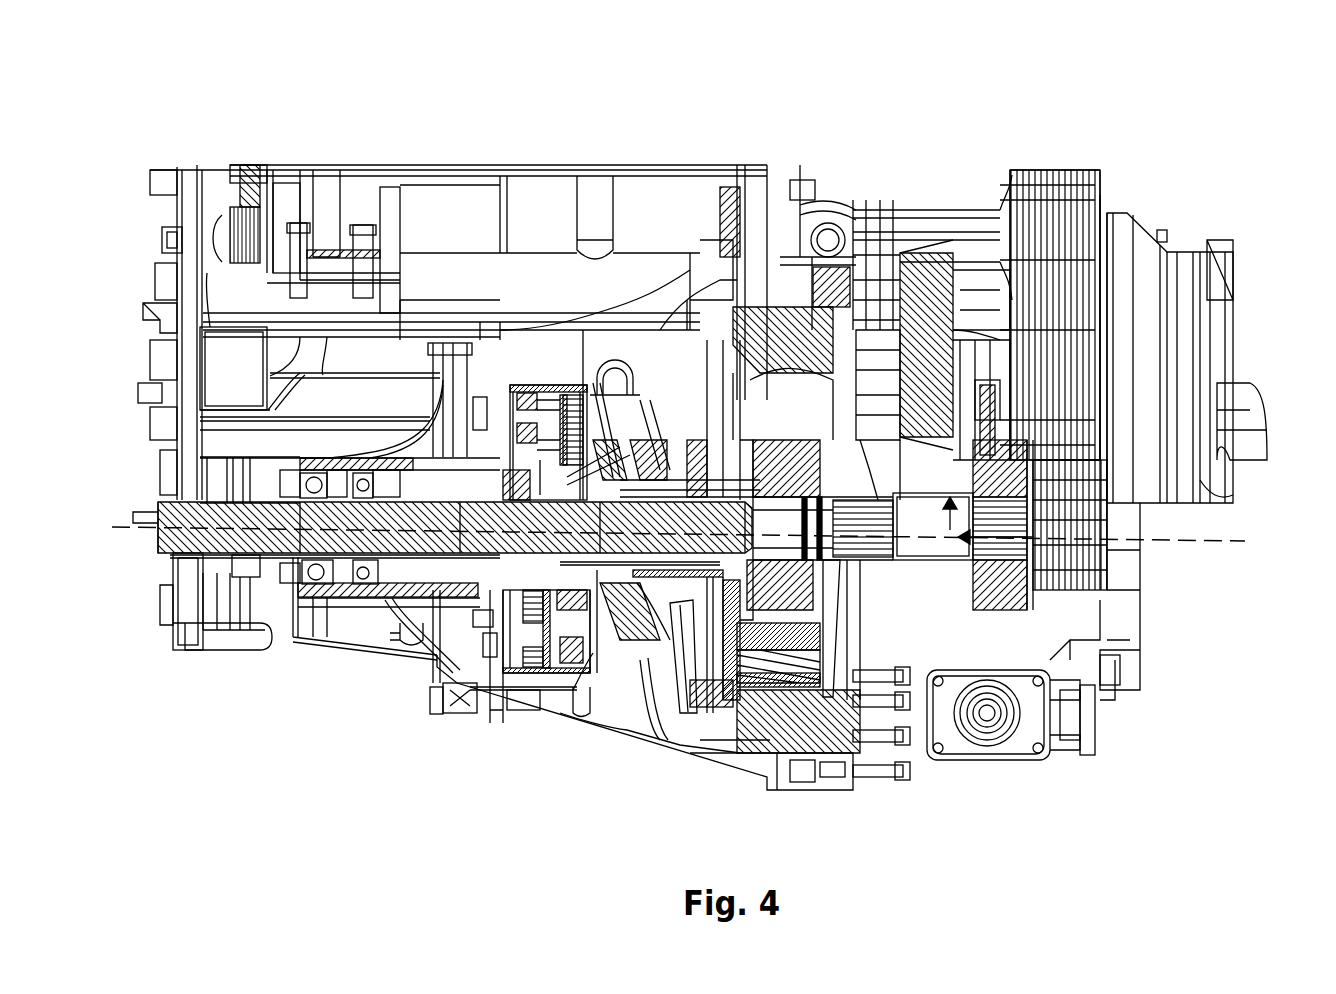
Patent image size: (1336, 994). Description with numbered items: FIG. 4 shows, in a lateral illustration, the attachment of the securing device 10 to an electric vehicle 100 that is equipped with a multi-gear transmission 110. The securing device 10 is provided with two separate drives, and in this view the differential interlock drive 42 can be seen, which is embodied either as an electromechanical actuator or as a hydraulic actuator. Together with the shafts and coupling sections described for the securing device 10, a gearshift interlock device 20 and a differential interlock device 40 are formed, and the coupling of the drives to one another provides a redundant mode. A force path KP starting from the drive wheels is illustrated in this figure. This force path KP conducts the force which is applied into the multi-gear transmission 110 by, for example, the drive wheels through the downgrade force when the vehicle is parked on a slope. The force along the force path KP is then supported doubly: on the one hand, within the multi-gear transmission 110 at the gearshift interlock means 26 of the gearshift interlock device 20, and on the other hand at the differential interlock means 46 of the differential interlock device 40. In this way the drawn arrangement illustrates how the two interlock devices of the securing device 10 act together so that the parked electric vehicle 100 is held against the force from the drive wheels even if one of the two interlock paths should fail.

The electric vehicle 100 is at (240, 120).
The gearshift interlock means 26 is at (800, 285).
The gearshift interlock device 20 is at (905, 300).
The multi-gear transmission 110 is at (925, 300).
The differential interlock device 40 is at (1175, 724).
The differential interlock means 46 is at (1077, 563).
The force path KP is at (1245, 541).
The securing device 10 is at (927, 787).
The differential interlock drive 42 is at (1037, 753).